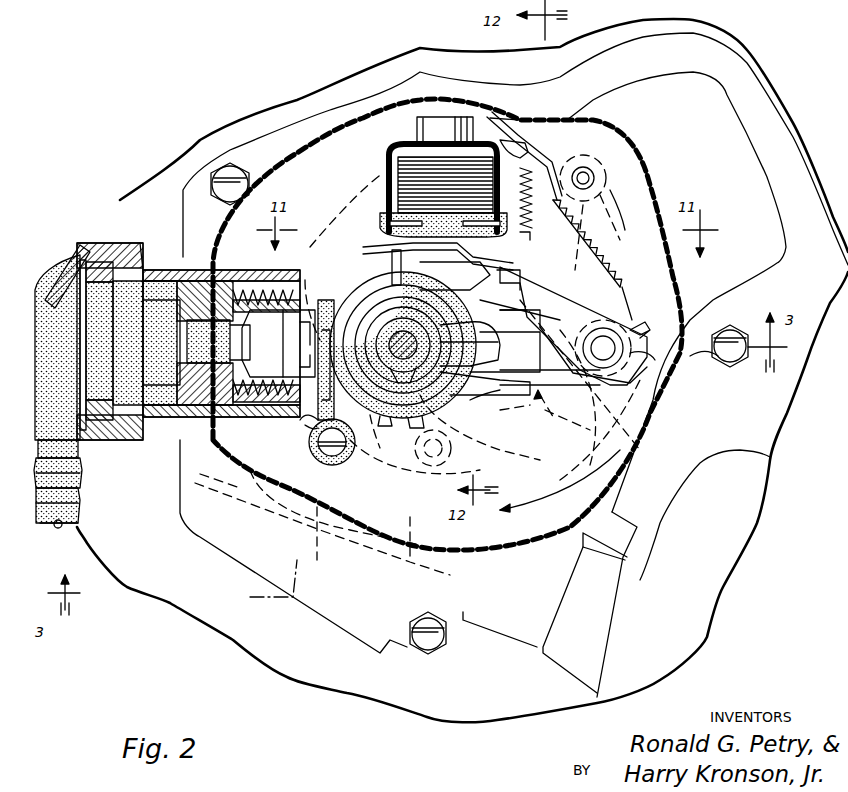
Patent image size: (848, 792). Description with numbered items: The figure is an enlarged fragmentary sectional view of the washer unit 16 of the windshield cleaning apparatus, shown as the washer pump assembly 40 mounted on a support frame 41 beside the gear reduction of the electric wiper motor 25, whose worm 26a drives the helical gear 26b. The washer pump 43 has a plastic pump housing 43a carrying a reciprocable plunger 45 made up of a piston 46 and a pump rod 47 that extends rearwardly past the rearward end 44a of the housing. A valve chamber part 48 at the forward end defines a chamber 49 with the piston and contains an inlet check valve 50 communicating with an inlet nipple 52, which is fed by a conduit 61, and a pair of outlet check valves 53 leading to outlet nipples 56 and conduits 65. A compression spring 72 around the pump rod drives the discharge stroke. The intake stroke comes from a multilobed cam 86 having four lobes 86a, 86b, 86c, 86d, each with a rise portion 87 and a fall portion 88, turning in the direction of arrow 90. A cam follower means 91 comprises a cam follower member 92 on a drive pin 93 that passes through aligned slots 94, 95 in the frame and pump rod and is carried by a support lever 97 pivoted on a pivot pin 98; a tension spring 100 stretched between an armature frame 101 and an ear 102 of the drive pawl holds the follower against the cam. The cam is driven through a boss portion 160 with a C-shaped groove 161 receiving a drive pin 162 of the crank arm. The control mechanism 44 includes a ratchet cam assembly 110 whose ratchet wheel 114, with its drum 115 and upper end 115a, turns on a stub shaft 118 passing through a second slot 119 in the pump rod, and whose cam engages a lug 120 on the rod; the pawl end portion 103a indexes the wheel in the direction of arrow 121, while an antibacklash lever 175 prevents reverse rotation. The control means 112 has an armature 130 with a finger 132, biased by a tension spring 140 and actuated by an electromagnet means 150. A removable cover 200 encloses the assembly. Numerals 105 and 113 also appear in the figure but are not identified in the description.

The washer unit 16 is at (330, 108).
The washer pump assembly 40 is at (272, 128).
The support frame 41 is at (228, 152).
The washer pump 43 is at (76, 258).
The pump housing 43a is at (150, 243).
The control mechanism 44 is at (556, 150).
The rearward end of housing 44a is at (305, 423).
The plunger 45 is at (182, 360).
The piston 46 is at (184, 330).
The pump rod 47 is at (314, 291).
The valve chamber part 48 is at (66, 268).
The chamber 49 is at (145, 270).
The inlet check valve 50 is at (96, 262).
The inlet nipple 52 is at (80, 472).
The outlet check valves 53 is at (170, 330).
The outlet nipples 56 is at (78, 448).
The conduit 61 is at (40, 525).
The conduits 65 is at (78, 500).
The compression spring 72 is at (238, 284).
The multilobed cam 86 is at (562, 410).
The cam lobe 86a is at (580, 375).
The cam lobe 86b is at (480, 428).
The cam lobe 86c is at (329, 350).
The cam lobe 86d is at (443, 225).
The rise portion 87 is at (412, 428).
The fall portion 88 is at (442, 439).
The arrow 90 is at (540, 500).
The cam follower means 91 is at (625, 345).
The cam follower member 92 is at (590, 397).
The drive pin 93 is at (603, 355).
The elongated slot 94 is at (715, 346).
The elongated slot 95 is at (550, 347).
The support lever 97 is at (592, 212).
The pivot pin 98 is at (583, 168).
The tension spring 100 is at (590, 235).
The armature frame 101 is at (480, 137).
The ear 102 is at (646, 312).
The end portion of drive pawl 103a is at (455, 270).
The lever 105 is at (573, 326).
The ratchet cam assembly 110 is at (392, 424).
The control means 112 is at (386, 175).
The pin 113 is at (433, 448).
The ratchet wheel 114 is at (324, 350).
The drum 115 is at (460, 395).
The upper end of drum 115a is at (348, 455).
The stub shaft 118 is at (460, 315).
The second elongated slot 119 is at (485, 398).
The lug 120 is at (485, 380).
The arrow 121 is at (490, 343).
The armature 130 is at (375, 247).
The finger 132 is at (392, 262).
The tension spring 140 is at (524, 156).
The electromagnet means 150 is at (412, 157).
The boss portion 160 is at (538, 204).
The C-shaped groove 161 is at (505, 271).
The drive pin 162 is at (520, 305).
The antibacklash lever 175 is at (312, 447).
The removable cover 200 is at (660, 120).
The electric wiper motor 25 is at (700, 462).
The worm 26a is at (317, 510).
The helical gear 26b is at (410, 540).